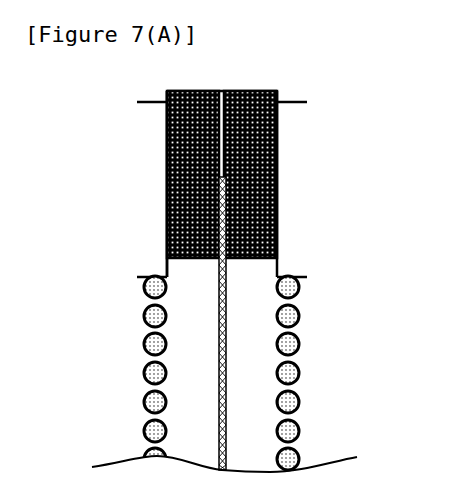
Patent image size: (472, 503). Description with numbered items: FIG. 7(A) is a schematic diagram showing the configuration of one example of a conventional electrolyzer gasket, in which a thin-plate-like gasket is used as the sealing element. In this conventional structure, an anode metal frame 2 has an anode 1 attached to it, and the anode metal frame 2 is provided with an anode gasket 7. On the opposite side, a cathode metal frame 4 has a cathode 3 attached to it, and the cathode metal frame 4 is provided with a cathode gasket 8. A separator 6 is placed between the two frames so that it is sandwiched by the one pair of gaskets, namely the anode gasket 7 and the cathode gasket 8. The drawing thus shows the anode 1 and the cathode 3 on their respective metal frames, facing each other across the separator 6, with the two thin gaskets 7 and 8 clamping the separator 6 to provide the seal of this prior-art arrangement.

The anode 1 is at (147, 400).
The anode metal frame 2 is at (148, 195).
The cathode 3 is at (293, 372).
The cathode metal frame 4 is at (303, 185).
The separator 6 is at (227, 420).
The anode gasket 7 is at (167, 140).
The cathode gasket 8 is at (273, 145).